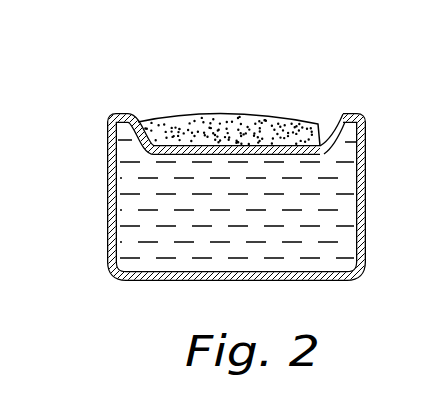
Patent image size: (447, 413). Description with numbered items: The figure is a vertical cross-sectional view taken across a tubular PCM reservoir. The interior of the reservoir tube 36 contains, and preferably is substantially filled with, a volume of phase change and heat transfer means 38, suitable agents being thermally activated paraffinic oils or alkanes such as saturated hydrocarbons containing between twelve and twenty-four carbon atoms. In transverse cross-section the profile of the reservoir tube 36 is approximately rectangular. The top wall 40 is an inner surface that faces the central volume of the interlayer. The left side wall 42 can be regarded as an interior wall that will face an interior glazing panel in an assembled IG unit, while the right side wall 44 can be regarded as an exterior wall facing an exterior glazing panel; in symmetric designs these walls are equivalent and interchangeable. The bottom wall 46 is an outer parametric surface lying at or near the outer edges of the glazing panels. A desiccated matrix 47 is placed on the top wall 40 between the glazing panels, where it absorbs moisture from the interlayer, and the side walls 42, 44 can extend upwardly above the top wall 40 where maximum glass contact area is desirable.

The reservoir tube 36 is at (181, 96).
The phase change and heat transfer means 38 is at (153, 203).
The top wall 40 is at (255, 119).
The left side wall 42 is at (108, 173).
The right side wall 44 is at (368, 157).
The bottom wall 46 is at (167, 279).
The desiccated matrix 47 is at (297, 125).